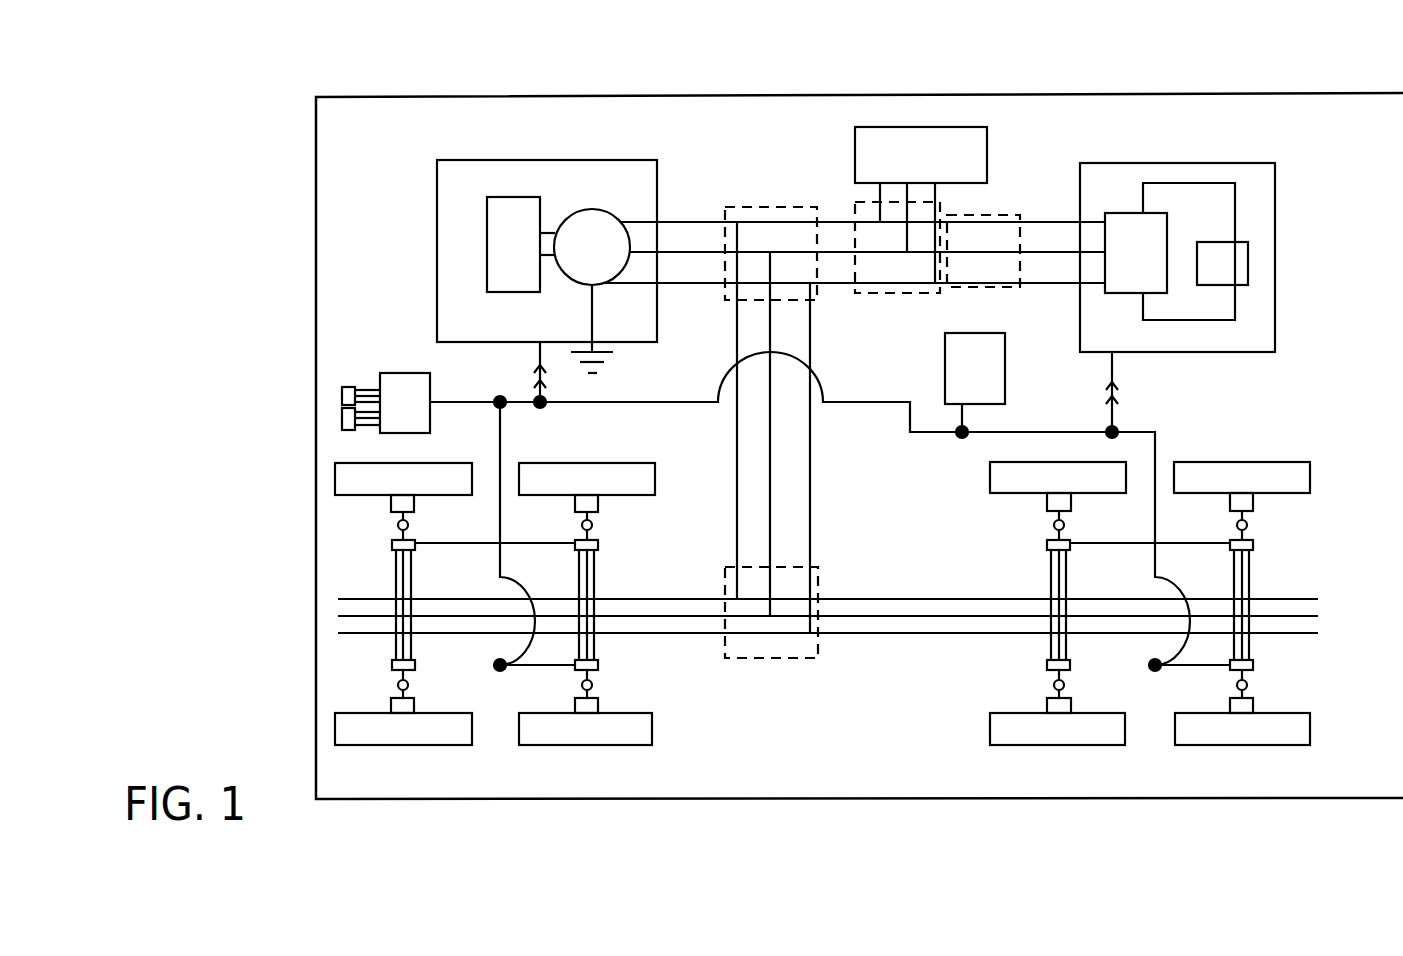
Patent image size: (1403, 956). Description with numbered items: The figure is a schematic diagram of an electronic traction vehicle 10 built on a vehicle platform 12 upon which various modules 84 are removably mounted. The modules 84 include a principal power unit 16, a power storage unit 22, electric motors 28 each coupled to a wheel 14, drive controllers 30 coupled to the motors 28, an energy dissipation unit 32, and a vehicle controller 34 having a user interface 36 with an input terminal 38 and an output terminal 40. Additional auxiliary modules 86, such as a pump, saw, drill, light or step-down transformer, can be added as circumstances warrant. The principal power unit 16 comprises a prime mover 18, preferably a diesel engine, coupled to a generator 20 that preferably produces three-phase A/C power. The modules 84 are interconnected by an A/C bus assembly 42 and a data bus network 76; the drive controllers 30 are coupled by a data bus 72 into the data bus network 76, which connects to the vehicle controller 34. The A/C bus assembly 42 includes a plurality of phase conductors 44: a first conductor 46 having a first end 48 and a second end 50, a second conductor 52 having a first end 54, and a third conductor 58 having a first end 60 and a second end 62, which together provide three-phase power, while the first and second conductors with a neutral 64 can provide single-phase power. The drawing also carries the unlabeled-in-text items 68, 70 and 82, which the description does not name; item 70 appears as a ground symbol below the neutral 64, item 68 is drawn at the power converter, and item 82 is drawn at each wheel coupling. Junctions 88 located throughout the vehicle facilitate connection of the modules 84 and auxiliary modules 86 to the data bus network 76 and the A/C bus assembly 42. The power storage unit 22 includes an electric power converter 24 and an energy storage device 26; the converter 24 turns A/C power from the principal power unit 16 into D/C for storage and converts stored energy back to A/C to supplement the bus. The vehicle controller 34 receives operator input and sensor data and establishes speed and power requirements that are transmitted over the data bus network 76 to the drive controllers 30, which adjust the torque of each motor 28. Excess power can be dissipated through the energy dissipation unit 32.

The electronic traction vehicle 10 is at (198, 102).
The vehicle platform 12 is at (602, 95).
The wheel 14 is at (340, 498).
The principal power unit 16 is at (478, 160).
The prime mover 18 is at (487, 262).
The generator 20 is at (569, 213).
The power storage unit 22 is at (1202, 163).
The electric power converter 24 is at (1118, 213).
The energy storage device 26 is at (1221, 242).
The electric motor 28 is at (409, 523).
The drive controller 30 is at (392, 545).
The energy dissipation unit 32 is at (855, 137).
The vehicle controller 34 is at (393, 373).
The user interface 36 is at (305, 406).
The input terminal 38 is at (350, 387).
The output terminal 40 is at (349, 430).
The A/C bus assembly 42 is at (884, 596).
The phase conductors 44 is at (822, 480).
The first conductor 46 is at (700, 222).
The first end of first conductor 48 is at (627, 212).
The second end of first conductor 50 is at (1076, 210).
The second conductor 52 is at (681, 251).
The first end of second conductor 54 is at (572, 303).
The third conductor 58 is at (690, 285).
The first end of third conductor 60 is at (640, 262).
The second end of third conductor 62 is at (1096, 243).
The neutral 64 is at (597, 318).
The controller output 68 is at (1101, 292).
The ground 70 is at (615, 370).
The data bus 72 is at (641, 403).
The data bus network 76 is at (528, 418).
The wheel hub 82 is at (575, 505).
The modules 84 is at (401, 201).
The auxiliary module 86 is at (1005, 395).
The junction 88 is at (787, 207).